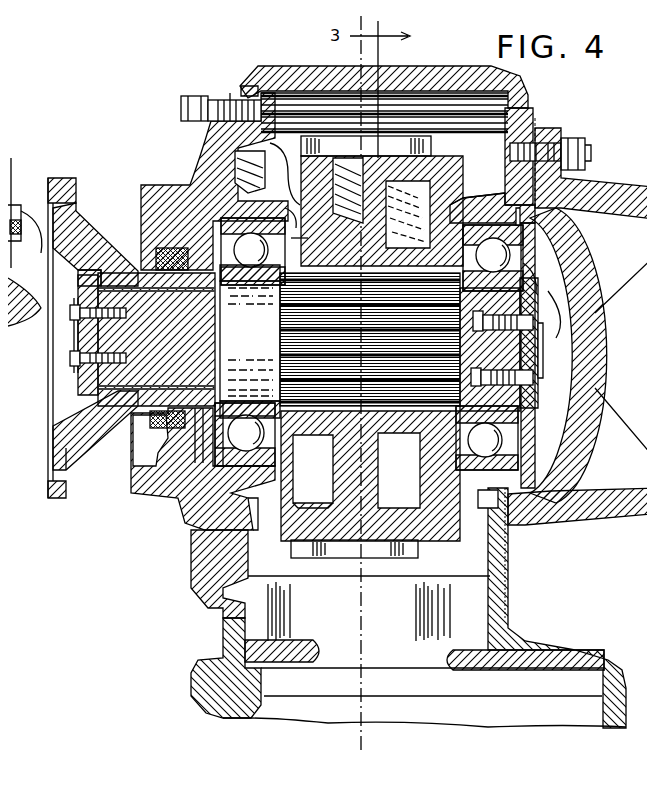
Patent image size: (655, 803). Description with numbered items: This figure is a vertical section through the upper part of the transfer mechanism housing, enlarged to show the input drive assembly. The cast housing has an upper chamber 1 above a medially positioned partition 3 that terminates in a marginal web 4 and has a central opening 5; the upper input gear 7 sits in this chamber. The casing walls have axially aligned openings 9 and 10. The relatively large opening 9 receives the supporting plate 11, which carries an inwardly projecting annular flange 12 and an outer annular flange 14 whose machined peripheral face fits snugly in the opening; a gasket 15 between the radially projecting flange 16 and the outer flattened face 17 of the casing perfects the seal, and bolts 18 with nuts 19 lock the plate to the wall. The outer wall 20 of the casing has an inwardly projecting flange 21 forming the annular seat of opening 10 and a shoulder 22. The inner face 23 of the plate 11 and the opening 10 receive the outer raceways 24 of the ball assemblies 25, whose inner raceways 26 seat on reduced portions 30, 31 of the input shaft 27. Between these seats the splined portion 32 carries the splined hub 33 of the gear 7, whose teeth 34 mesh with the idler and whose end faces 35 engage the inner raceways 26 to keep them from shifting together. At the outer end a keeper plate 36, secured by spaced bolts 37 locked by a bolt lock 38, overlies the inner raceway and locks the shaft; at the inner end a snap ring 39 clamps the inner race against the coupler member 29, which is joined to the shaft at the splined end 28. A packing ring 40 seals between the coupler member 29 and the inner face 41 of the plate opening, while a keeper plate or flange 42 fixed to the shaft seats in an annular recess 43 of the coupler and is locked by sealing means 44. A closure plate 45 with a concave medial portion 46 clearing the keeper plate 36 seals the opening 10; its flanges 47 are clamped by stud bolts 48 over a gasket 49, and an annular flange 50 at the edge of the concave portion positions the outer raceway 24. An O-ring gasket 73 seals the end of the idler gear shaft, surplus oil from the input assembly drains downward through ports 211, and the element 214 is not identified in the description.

The upper chamber 1 is at (423, 90).
The partition 3 is at (284, 659).
The marginal web 4 is at (382, 606).
The central opening 5 is at (342, 628).
The upper input gear 7 is at (368, 235).
The opening 9 is at (285, 174).
The opening 10 is at (482, 197).
The supporting plate 11 is at (178, 180).
The inwardly projecting annular flange 12 is at (334, 196).
The outer annular flange 14 is at (242, 150).
The gasket 15 is at (234, 80).
The radially projecting flange 16 is at (216, 90).
The outer flattened face 17 is at (215, 592).
The bolts 18 is at (208, 118).
The nuts 19 is at (195, 88).
The outer wall of the casing 20 is at (510, 118).
The inwardly projecting flange 21 is at (453, 200).
The shoulder 22 is at (419, 249).
The inner face 23 is at (307, 239).
The outer raceways 24 is at (416, 249).
The ball assemblies 25 is at (372, 254).
The inner raceways 26 is at (434, 291).
The input shaft 27 is at (135, 400).
The splined end 28 is at (117, 263).
The coupler member 29 is at (45, 440).
The reduced portion 30 is at (257, 335).
The reduced portion 31 is at (503, 428).
The splined portion 32 is at (295, 300).
The splined hub 33 is at (393, 427).
The teeth 34 is at (426, 532).
The end faces 35 is at (405, 448).
The keeper plate 36 is at (505, 400).
The spaced bolts 37 is at (535, 330).
The bolt lock 38 is at (536, 352).
The snap ring 39 is at (245, 434).
The packing ring 40 is at (160, 420).
The inner face 41 is at (155, 246).
The keeper plate 42 is at (72, 376).
The annular recess 43 is at (80, 280).
The sealing means 44 is at (67, 337).
The closure plate 45 is at (566, 246).
The concave medial portion 46 is at (566, 313).
The flanges 47 is at (551, 128).
The stud bolts 48 is at (585, 146).
The gasket 49 is at (530, 133).
The annular flange 50 is at (513, 215).
The O-ring gasket 73 is at (8, 176).
The ports 211 is at (225, 488).
The arm 214 is at (28, 268).